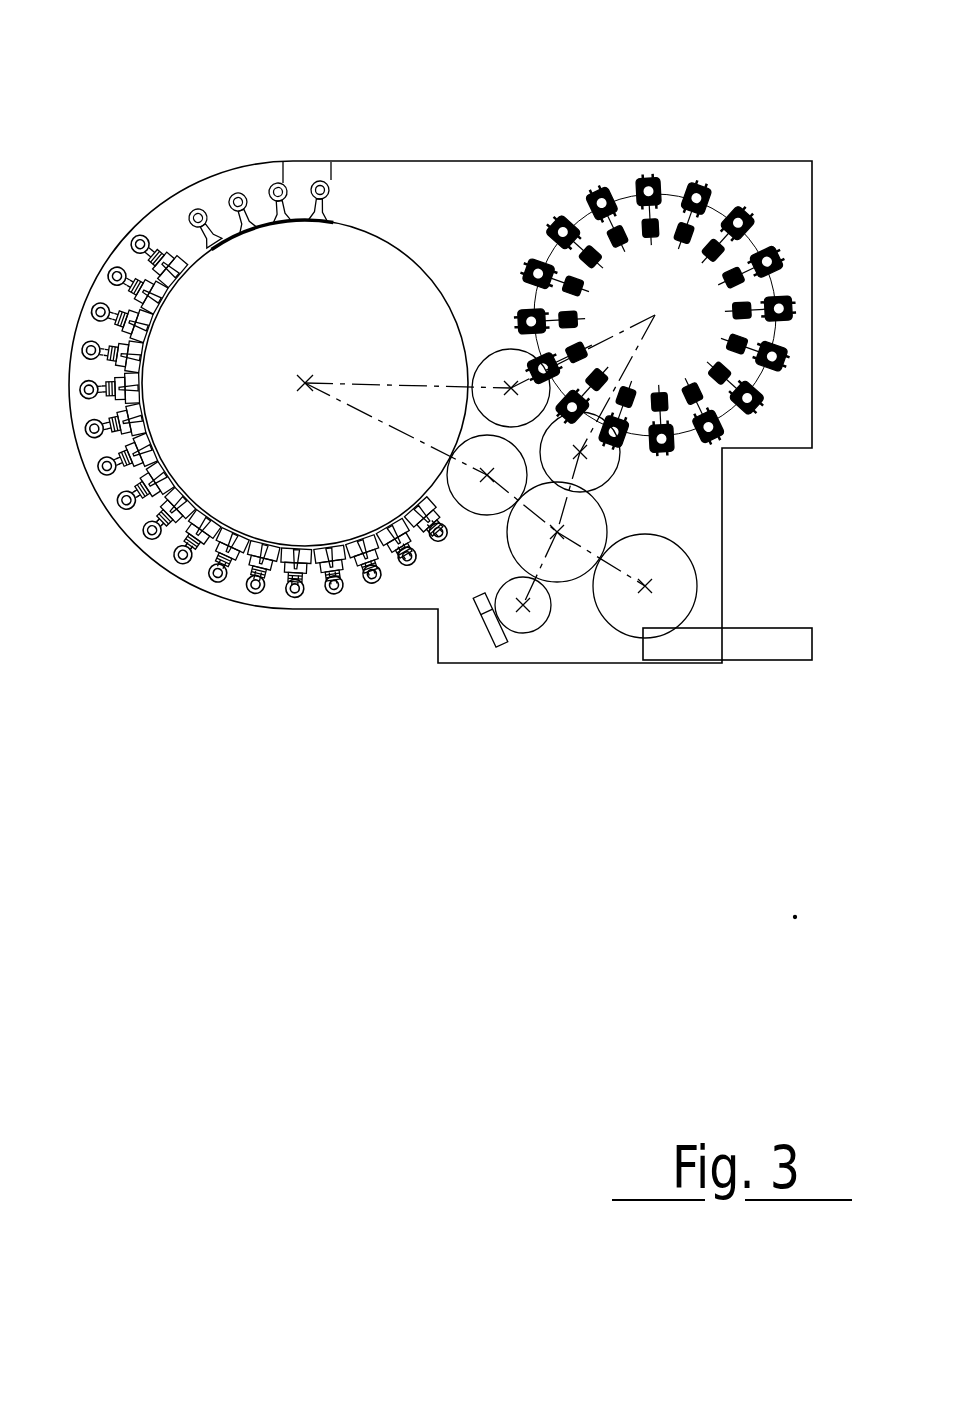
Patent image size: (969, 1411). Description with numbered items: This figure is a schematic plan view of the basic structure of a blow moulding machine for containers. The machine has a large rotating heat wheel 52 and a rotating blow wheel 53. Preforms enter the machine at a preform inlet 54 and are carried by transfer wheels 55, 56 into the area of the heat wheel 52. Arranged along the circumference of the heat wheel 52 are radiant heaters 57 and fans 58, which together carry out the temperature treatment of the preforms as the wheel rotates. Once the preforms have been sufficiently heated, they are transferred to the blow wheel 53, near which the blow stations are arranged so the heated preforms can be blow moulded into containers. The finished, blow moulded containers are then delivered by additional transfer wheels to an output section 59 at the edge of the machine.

The heat wheel 52 is at (357, 265).
The blow wheel 53 is at (722, 210).
The preform inlet 54 is at (490, 642).
The transfer wheel 55 is at (563, 573).
The transfer wheel 56 is at (473, 507).
The radiant heater 57 is at (244, 577).
The fan 58 is at (206, 587).
The output section 59 is at (780, 638).